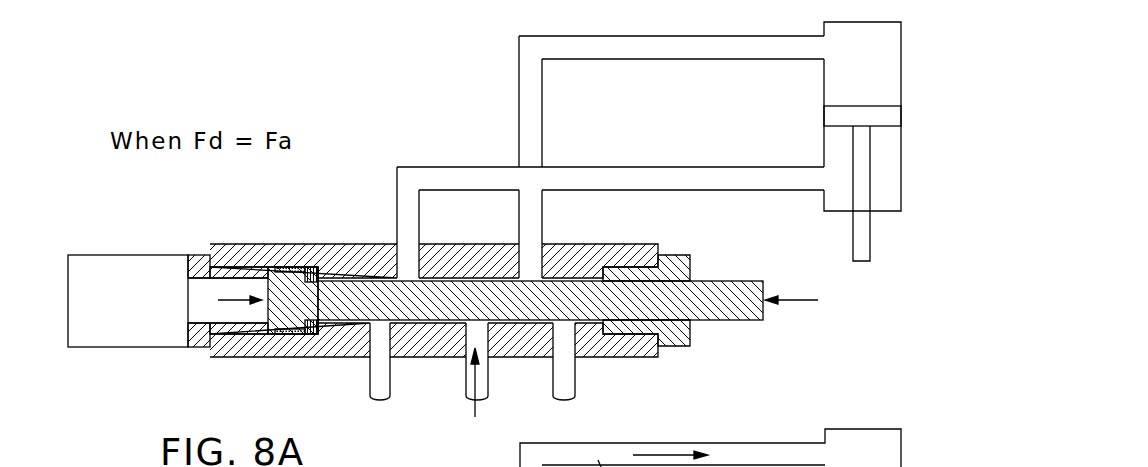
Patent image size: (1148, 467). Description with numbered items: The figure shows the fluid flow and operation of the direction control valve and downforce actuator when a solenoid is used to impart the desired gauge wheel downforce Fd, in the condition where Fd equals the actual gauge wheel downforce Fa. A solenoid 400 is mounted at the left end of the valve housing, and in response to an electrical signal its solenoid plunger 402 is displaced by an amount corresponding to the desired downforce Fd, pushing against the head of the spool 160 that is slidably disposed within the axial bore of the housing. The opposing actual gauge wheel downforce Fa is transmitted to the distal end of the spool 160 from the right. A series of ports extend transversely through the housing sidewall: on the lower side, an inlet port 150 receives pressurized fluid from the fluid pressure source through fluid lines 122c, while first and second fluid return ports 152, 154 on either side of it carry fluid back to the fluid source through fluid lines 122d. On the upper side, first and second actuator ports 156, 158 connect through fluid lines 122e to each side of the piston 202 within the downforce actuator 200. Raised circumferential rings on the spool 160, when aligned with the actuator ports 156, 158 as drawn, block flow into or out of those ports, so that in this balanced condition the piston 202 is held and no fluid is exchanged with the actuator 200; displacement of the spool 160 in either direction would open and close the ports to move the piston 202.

The solenoid 400 is at (98, 262).
The solenoid plunger 402 is at (203, 315).
The first actuator port 156 is at (405, 243).
The second actuator port 158 is at (537, 245).
The fluid lines 122e is at (602, 47).
The downforce actuator 200 is at (835, 79).
The piston 202 is at (832, 115).
The spool 160 is at (731, 316).
The first fluid return port 152 is at (368, 365).
The inlet port 150 is at (468, 358).
The second fluid return port 154 is at (573, 358).
The fluid lines 122d is at (370, 396).
The fluid lines 122c is at (467, 400).